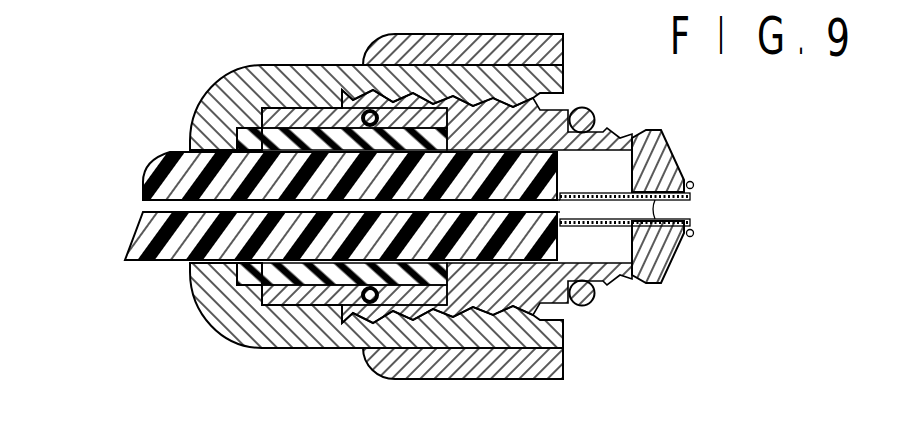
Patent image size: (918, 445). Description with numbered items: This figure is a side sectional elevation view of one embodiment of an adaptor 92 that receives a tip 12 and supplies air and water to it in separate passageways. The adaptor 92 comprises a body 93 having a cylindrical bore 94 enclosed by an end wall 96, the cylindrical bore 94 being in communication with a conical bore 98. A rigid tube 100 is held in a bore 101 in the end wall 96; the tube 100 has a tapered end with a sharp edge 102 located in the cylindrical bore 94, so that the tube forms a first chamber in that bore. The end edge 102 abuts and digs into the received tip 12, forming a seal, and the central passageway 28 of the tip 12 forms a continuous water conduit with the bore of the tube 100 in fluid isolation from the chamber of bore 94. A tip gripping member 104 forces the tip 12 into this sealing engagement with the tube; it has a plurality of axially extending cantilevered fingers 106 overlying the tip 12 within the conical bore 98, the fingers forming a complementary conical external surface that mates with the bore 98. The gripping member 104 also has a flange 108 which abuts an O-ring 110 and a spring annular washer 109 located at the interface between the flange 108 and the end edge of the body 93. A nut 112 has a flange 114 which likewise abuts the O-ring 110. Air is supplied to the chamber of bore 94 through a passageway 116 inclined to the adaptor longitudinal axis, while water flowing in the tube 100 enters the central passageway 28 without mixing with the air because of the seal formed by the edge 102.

The tip 12 is at (143, 228).
The central passageway 28 is at (142, 207).
The adaptor 92 is at (600, 85).
The body 93 is at (318, 110).
The cylindrical bore 94 is at (610, 163).
The end wall 96 is at (678, 250).
The conical bore 98 is at (463, 138).
The rigid tube 100 is at (694, 216).
The bore 101 is at (562, 203).
The sharp edge 102 is at (583, 306).
The tip gripping member 104 is at (306, 124).
The cantilevered fingers 106 is at (312, 285).
The flange 108 is at (232, 92).
The spring annular washer 109 is at (290, 277).
The O-ring 110 is at (236, 268).
The nut 112 is at (335, 348).
The flange 114 is at (196, 118).
The passageway 116 is at (680, 154).